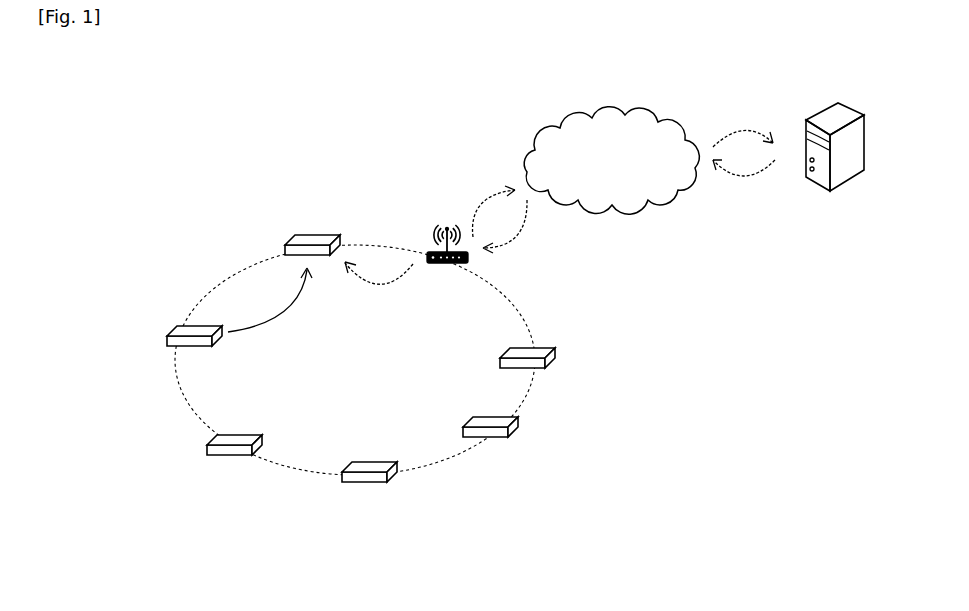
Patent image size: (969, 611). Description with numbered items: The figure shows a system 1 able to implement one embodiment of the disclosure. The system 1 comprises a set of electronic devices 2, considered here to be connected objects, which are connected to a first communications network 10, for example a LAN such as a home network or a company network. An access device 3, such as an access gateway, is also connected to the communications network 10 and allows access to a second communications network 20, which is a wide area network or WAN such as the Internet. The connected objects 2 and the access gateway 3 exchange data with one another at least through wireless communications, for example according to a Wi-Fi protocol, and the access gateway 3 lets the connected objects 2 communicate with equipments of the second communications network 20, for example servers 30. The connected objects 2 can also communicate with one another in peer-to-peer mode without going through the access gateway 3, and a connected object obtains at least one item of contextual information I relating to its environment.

The system 1 is at (128, 265).
The communications network 10 is at (245, 268).
The electronic device 2 is at (166, 335).
The item of contextual information I is at (318, 234).
The access device 3 is at (423, 249).
The second communications network 20 is at (545, 124).
The server 30 is at (801, 152).